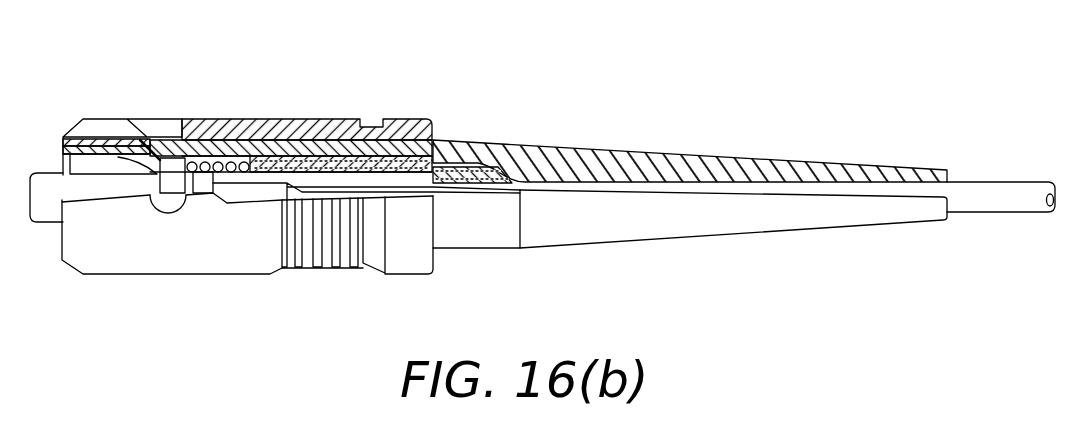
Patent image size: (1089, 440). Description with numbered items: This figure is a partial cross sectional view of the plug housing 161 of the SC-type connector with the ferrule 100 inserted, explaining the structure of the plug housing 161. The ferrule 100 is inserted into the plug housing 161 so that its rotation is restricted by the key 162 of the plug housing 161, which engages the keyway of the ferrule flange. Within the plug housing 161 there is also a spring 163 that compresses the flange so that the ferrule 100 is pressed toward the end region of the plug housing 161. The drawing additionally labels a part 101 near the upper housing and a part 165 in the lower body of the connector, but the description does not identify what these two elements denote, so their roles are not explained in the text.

The ferrule 100 is at (46, 173).
The ferrule 101 is at (366, 180).
The plug housing 161 is at (240, 119).
The key 162 is at (115, 137).
The spring 163 is at (229, 172).
The key 165 is at (176, 185).